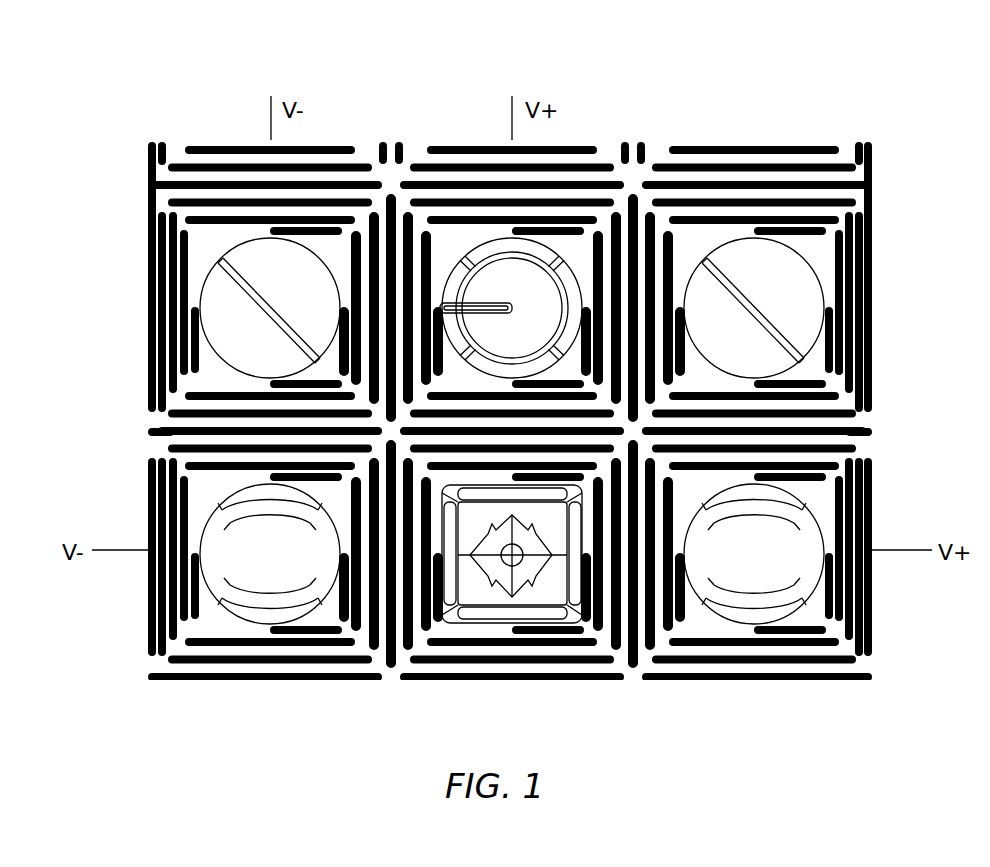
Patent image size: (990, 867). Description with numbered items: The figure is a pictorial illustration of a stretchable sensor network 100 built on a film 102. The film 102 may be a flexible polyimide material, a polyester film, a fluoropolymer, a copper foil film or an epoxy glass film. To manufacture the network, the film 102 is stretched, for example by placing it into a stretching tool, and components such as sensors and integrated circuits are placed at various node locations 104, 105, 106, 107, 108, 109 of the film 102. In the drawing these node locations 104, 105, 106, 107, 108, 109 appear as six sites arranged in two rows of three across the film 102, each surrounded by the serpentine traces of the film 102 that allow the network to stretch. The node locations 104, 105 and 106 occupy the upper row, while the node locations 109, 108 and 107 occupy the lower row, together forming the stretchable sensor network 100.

The stretchable sensor network 100 is at (664, 90).
The film 102 is at (868, 183).
The node location 104 is at (240, 257).
The node location 105 is at (470, 246).
The node location 106 is at (733, 258).
The node location 107 is at (745, 615).
The node location 108 is at (478, 615).
The node location 109 is at (246, 615).